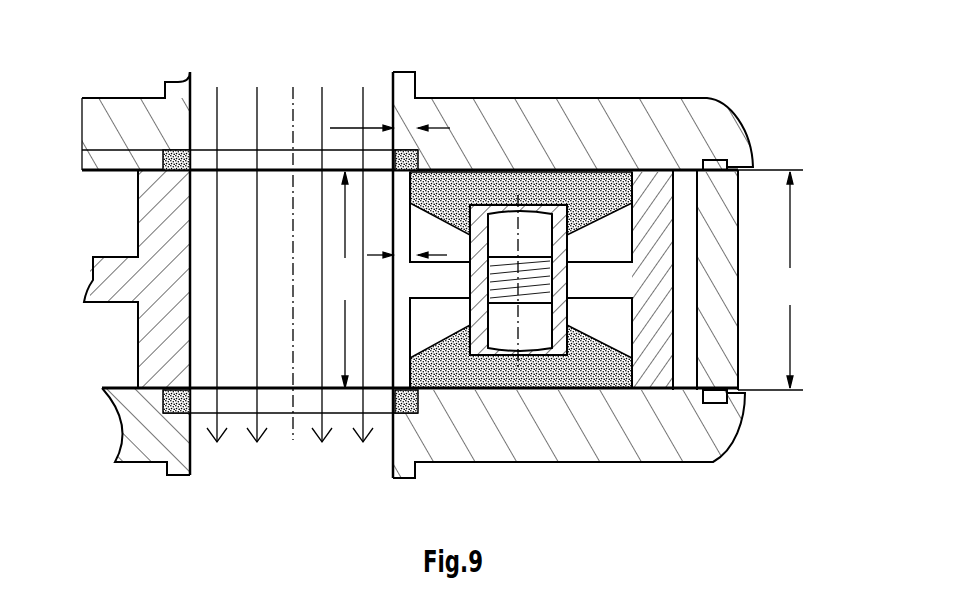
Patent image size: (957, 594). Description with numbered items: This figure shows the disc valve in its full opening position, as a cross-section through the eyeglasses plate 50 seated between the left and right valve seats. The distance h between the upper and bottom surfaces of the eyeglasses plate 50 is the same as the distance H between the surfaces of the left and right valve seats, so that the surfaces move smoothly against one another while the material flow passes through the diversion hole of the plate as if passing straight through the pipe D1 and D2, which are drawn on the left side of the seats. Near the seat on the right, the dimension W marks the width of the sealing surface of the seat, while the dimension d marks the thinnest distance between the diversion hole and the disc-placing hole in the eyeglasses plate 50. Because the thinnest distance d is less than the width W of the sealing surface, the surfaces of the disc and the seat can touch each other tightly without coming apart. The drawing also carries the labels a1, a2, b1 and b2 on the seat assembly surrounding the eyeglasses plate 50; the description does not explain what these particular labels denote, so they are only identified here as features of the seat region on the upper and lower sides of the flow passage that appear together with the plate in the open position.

The eyeglasses plate 50 is at (478, 170).
The first annular flange a1 is at (647, 170).
The second annular flange a2 is at (647, 390).
The first seal ring b1 is at (418, 150).
The second seal ring b2 is at (420, 413).
The pipe D1 is at (192, 137).
The pipe D2 is at (190, 427).
The width of the sealing surface of the seat W is at (386, 116).
The distance between the surfaces of the left and right valve seats H is at (345, 280).
The thinnest distance between the diversion hole and the disc-placing hole d is at (407, 236).
The distance between the upper and bottom surfaces of the eyeglasses plate h is at (791, 280).